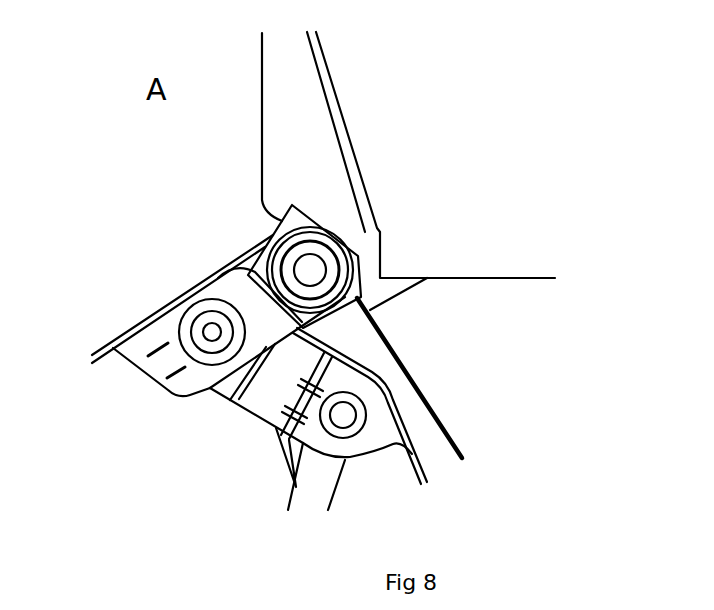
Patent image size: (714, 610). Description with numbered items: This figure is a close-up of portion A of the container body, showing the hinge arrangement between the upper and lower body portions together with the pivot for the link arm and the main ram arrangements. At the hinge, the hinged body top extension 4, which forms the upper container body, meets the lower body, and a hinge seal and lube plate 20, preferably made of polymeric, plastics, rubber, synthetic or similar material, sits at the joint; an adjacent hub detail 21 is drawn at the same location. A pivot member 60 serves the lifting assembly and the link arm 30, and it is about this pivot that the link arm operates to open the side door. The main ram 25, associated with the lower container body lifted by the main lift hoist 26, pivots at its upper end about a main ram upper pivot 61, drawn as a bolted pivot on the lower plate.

The hinged body top extension 4 is at (257, 152).
The hinge seal and lube plate 20 is at (313, 207).
The pivot hub 21 is at (378, 232).
The lower container body 25 is at (83, 348).
The main lift hoist 26 is at (334, 503).
The link arm 30 is at (427, 482).
The pivot member 60 is at (186, 316).
The main ram upper pivot 61 is at (347, 414).